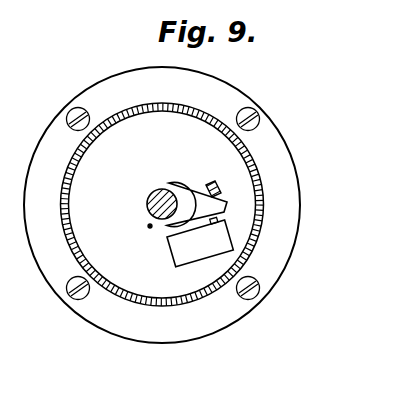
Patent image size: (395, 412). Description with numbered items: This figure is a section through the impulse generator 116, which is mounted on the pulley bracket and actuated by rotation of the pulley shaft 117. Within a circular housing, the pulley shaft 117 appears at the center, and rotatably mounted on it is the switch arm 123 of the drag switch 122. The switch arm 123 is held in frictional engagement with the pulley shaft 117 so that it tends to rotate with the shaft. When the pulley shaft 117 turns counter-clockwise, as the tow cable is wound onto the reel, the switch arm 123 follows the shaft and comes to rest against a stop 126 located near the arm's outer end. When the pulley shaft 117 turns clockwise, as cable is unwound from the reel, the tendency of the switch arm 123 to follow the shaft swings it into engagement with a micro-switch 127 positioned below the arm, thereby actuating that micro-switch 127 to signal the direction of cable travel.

The impulse generator 116 is at (222, 122).
The pulley shaft 117 is at (150, 203).
The drag switch 122 is at (148, 230).
The switch arm 123 is at (170, 182).
The stop 126 is at (212, 180).
The micro-switch 127 is at (200, 253).